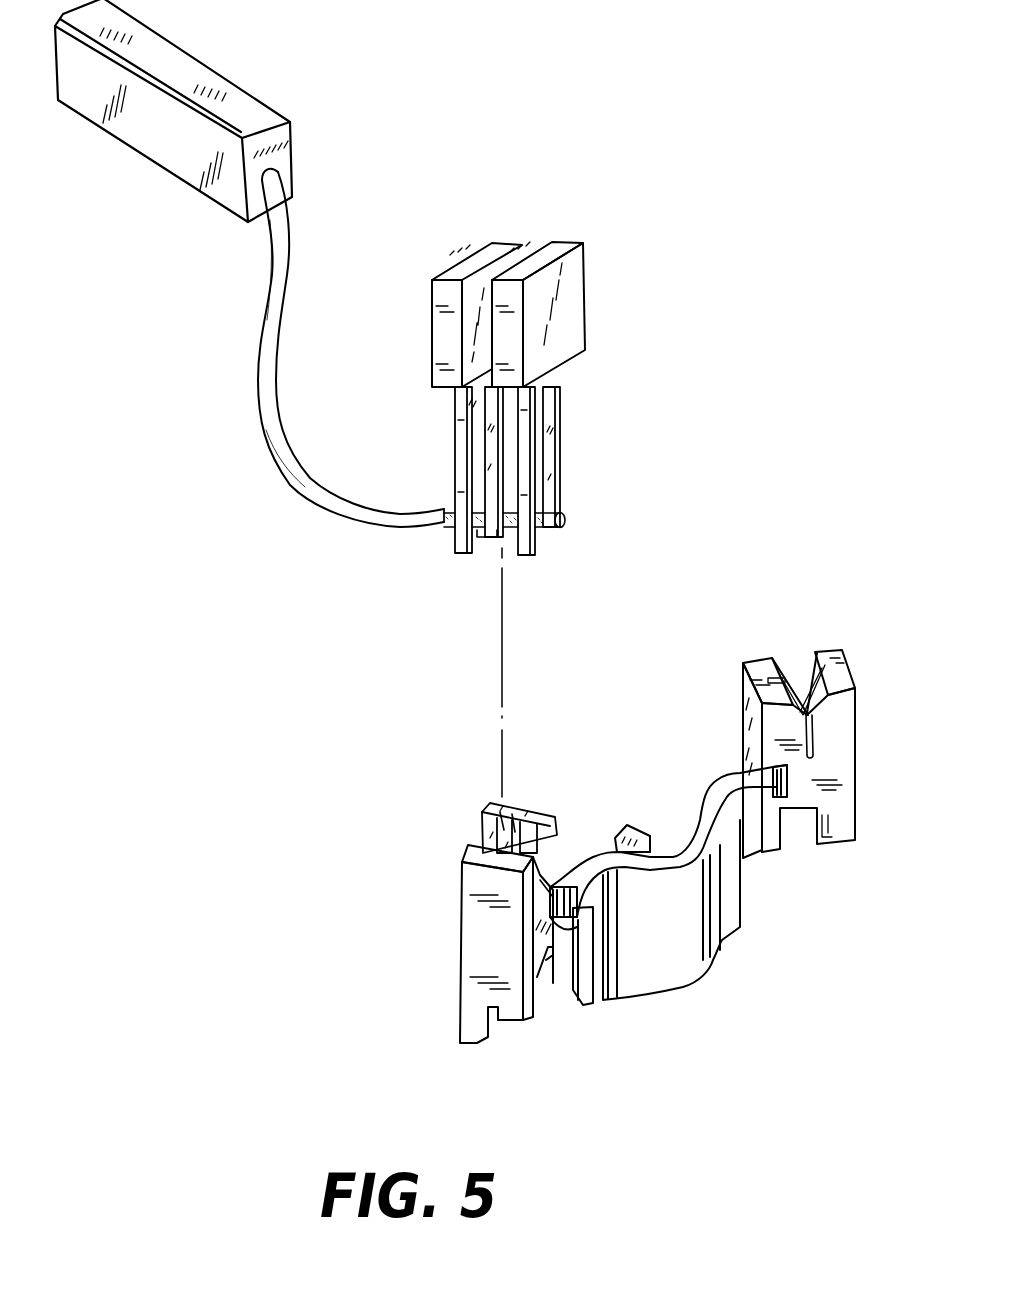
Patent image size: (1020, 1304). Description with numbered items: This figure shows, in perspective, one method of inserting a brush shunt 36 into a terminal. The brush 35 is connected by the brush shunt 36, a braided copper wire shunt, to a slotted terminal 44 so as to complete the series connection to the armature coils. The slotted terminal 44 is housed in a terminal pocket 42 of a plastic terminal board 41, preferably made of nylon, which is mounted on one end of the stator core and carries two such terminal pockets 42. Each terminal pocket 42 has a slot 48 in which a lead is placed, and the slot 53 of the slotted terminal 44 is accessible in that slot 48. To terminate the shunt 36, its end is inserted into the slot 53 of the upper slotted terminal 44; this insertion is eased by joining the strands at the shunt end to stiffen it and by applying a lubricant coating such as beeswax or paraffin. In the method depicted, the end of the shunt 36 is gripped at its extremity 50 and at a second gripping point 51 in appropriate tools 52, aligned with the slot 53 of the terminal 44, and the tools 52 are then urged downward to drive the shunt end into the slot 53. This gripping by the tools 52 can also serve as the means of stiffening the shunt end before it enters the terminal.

The brush 35 is at (197, 77).
The brush shunt 36 is at (283, 253).
The tools 52 is at (515, 257).
The extremity 50 is at (563, 512).
The second gripping point 51 is at (453, 527).
The slot 53 is at (507, 813).
The slot 48 is at (815, 727).
The slotted terminal 44 is at (487, 838).
The terminal pocket 42 is at (468, 945).
The terminal board 41 is at (682, 973).